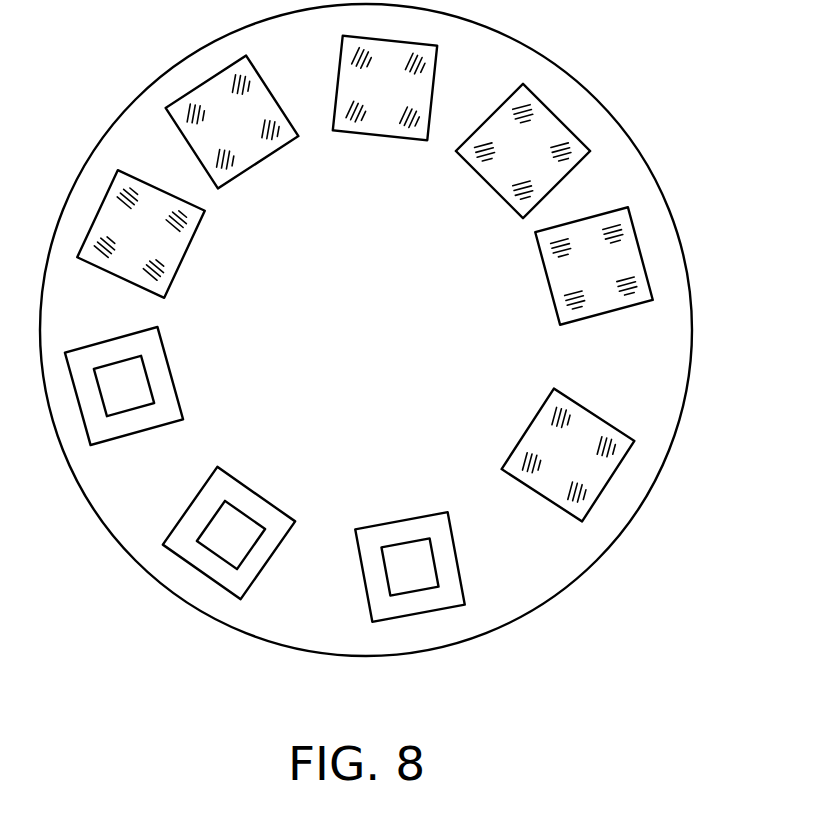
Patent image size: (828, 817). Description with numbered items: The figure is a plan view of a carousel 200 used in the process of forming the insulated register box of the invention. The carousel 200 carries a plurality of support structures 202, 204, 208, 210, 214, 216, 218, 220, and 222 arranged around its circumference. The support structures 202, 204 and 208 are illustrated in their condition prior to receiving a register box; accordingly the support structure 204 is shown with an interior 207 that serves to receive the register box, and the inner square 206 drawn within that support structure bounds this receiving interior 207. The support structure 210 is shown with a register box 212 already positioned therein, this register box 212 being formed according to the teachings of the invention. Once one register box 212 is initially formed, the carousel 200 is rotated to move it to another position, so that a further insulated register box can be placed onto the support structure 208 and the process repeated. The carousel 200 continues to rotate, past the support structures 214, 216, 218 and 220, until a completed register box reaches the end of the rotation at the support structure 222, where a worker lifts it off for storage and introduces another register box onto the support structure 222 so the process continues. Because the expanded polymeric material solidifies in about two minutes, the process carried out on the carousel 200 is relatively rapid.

The carousel 200 is at (670, 388).
The support structure 202 is at (395, 518).
The support structure 204 is at (248, 514).
The inner square of rotated die 206 is at (247, 508).
The interior 207 is at (236, 535).
The support structure 208 is at (173, 360).
The support structure 210 is at (192, 246).
The register box 212 is at (105, 267).
The support structure 214 is at (268, 158).
The support structure 216 is at (380, 143).
The support structure 218 is at (492, 190).
The support structure 220 is at (547, 290).
The support structure 222 is at (523, 430).